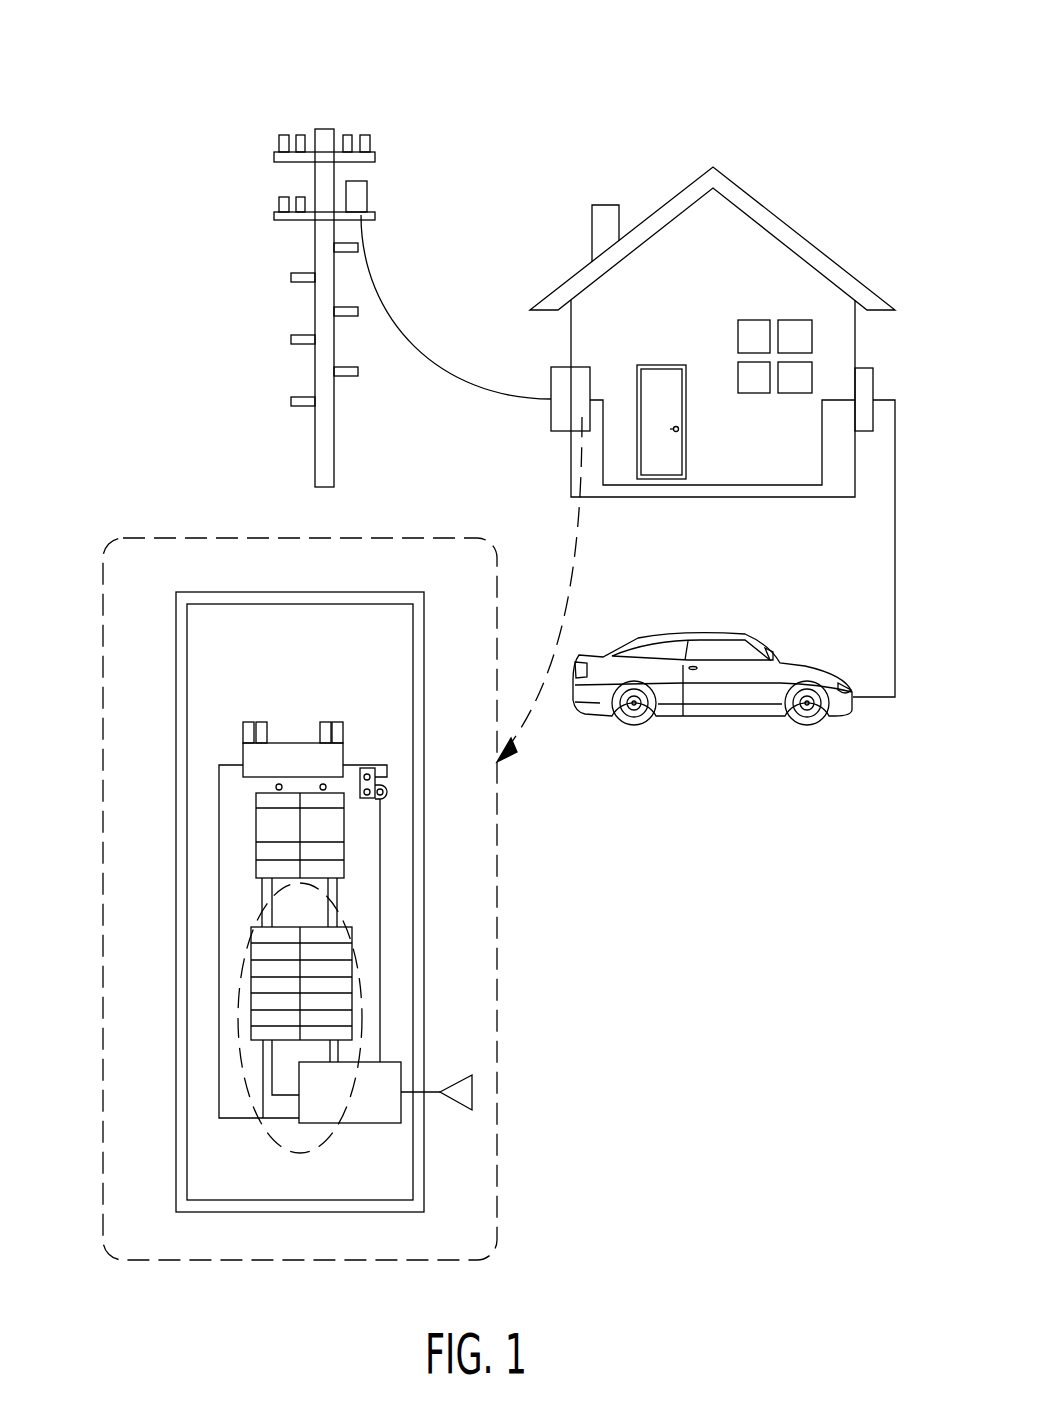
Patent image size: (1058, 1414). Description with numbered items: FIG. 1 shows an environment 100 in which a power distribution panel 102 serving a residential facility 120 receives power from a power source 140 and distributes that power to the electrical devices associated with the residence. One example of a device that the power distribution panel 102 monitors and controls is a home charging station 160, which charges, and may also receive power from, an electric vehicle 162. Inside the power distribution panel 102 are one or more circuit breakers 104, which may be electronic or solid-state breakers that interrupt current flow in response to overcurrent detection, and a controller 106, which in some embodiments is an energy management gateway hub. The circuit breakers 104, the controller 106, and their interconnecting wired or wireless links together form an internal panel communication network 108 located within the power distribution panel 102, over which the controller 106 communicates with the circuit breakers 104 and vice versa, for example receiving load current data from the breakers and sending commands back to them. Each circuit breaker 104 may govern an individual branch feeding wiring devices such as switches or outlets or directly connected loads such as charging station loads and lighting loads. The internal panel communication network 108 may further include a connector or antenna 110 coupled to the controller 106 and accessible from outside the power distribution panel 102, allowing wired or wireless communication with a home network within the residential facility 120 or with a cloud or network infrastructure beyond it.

The environment 100 is at (188, 48).
The power distribution panel 102 is at (580, 367).
The circuit breakers 104 is at (262, 952).
The controller 106 is at (372, 1108).
The internal panel communication network 108 is at (270, 1150).
The connector or antenna 110 is at (472, 1083).
The residential facility 120 is at (808, 240).
The power source 140 is at (325, 128).
The home charging station 160 is at (864, 368).
The electric vehicle 162 is at (697, 633).